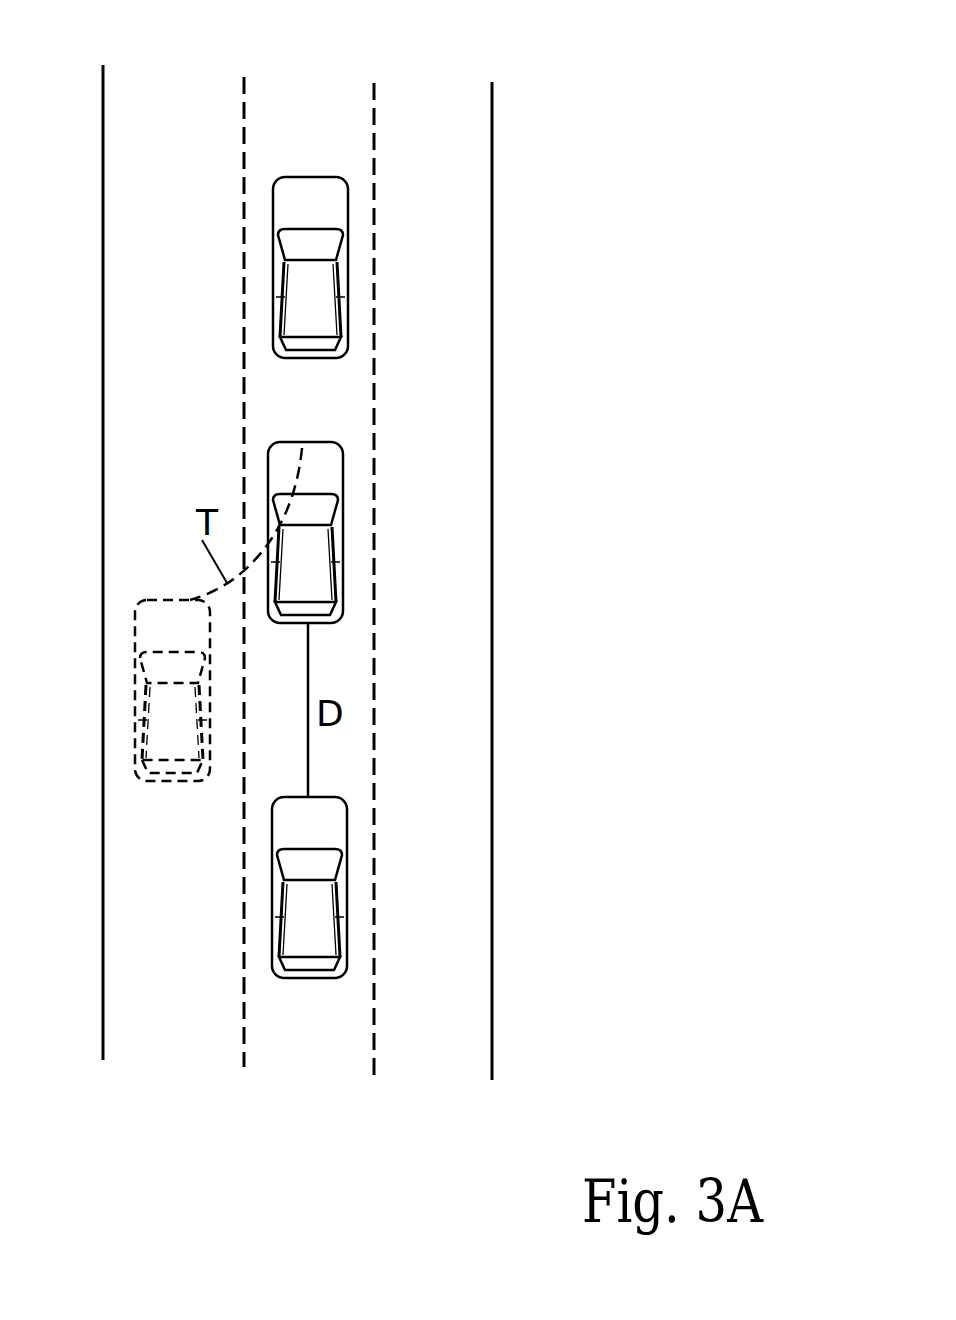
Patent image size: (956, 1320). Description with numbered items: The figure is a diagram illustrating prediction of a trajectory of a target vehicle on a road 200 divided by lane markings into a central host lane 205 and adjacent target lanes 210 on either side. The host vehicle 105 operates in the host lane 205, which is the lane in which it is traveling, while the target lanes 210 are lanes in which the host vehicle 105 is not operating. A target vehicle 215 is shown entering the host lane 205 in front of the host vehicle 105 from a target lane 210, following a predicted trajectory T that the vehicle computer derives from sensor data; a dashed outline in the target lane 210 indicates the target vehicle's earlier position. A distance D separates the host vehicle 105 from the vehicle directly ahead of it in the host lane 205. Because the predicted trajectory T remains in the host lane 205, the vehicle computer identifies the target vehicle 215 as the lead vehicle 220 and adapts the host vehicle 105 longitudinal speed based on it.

The road 200 is at (493, 82).
The host lane 205 is at (338, 1032).
The target lane 210 is at (208, 1032).
The target vehicle 215 is at (297, 440).
The lead vehicle 220 is at (380, 463).
The host vehicle 105 is at (347, 885).